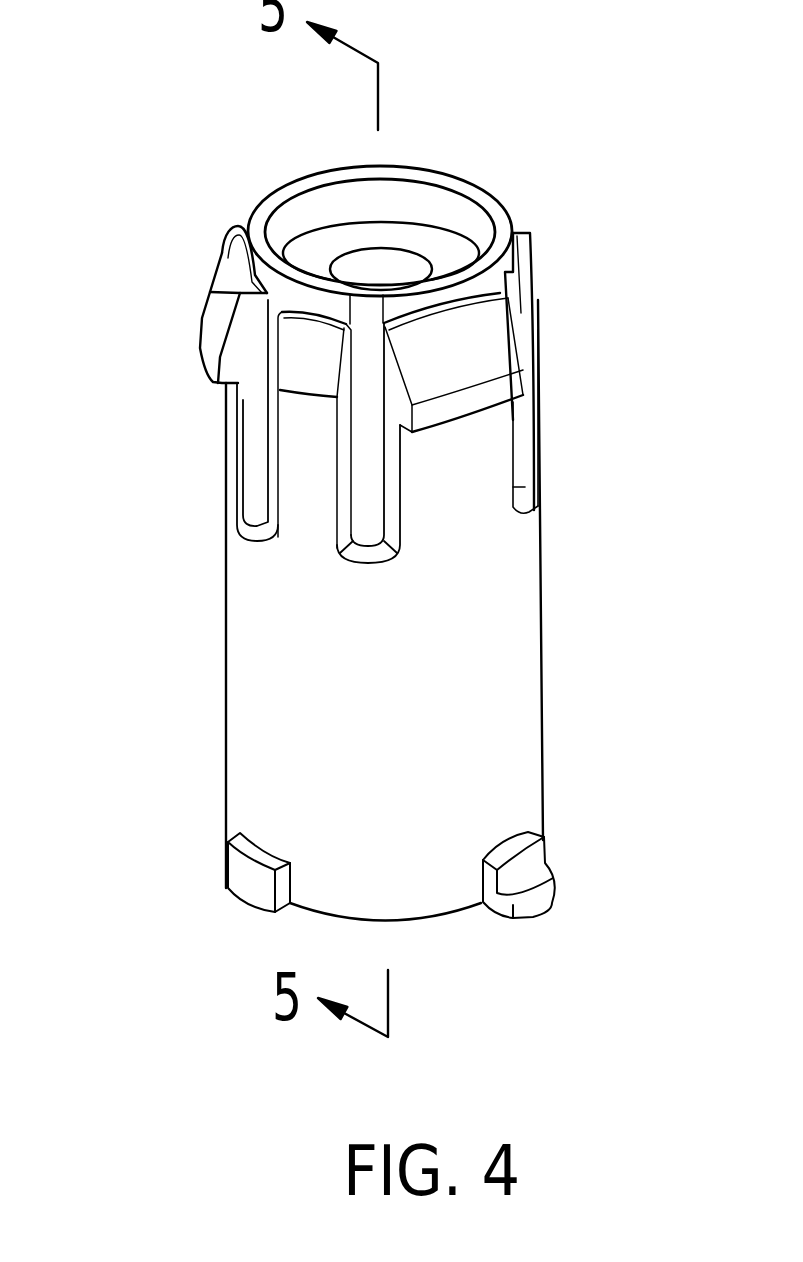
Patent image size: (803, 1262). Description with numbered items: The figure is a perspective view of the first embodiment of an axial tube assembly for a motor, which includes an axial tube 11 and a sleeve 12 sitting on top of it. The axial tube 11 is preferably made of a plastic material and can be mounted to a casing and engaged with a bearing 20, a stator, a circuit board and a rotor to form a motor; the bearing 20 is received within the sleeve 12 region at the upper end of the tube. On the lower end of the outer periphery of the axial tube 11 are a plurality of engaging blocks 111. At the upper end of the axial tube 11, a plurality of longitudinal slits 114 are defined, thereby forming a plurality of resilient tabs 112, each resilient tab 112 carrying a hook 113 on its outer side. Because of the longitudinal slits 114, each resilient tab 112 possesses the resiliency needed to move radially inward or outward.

The axial tube 11 is at (507, 636).
The engaging blocks 111 is at (533, 892).
The resilient tab 112 is at (470, 465).
The hook 113 is at (485, 358).
The longitudinal slits 114 is at (355, 503).
The sleeve 12 is at (480, 193).
The bearing 20 is at (405, 238).